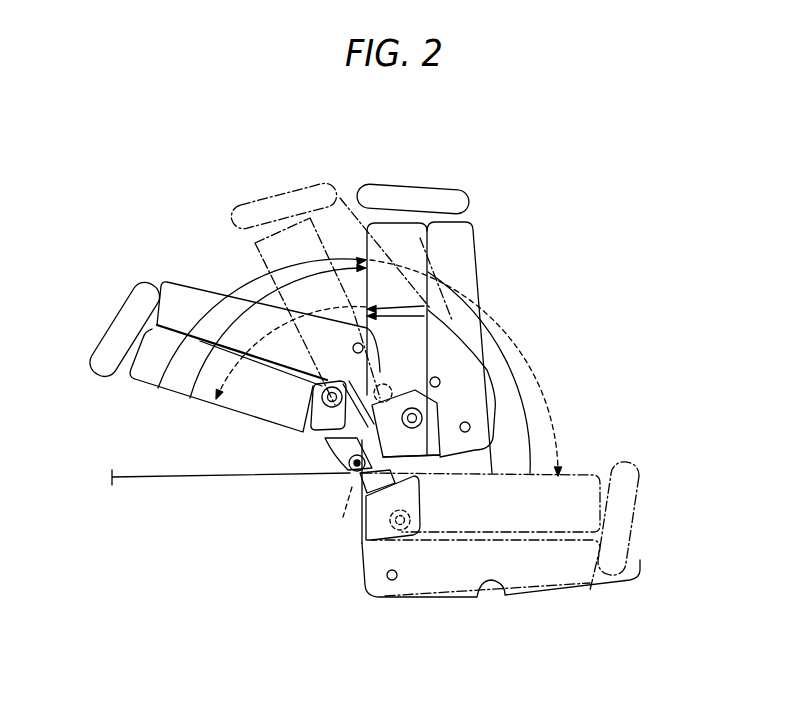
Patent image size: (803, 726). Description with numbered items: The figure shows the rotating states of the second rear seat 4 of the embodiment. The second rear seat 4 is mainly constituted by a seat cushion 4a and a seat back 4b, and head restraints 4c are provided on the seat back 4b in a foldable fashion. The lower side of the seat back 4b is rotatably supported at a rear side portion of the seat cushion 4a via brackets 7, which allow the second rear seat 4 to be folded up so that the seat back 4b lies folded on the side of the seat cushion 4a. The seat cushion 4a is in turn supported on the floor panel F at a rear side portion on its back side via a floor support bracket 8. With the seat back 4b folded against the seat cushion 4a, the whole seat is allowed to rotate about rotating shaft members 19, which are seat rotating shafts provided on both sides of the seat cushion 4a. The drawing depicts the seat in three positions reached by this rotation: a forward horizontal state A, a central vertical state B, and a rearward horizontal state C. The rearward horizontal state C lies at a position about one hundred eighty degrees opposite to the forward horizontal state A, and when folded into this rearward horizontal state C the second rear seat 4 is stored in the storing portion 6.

The second rear seat 4 is at (186, 405).
The seat cushion 4a is at (146, 375).
The seat back 4b is at (187, 296).
The head restraints 4c is at (116, 327).
The storing portion 6 is at (500, 596).
The brackets 7 is at (317, 431).
The floor support bracket 8 is at (337, 483).
The rotating shaft members 19 is at (355, 473).
The forward horizontal state A is at (109, 265).
The central vertical state B is at (430, 171).
The rearward horizontal state C is at (661, 469).
The floor panel F is at (193, 482).